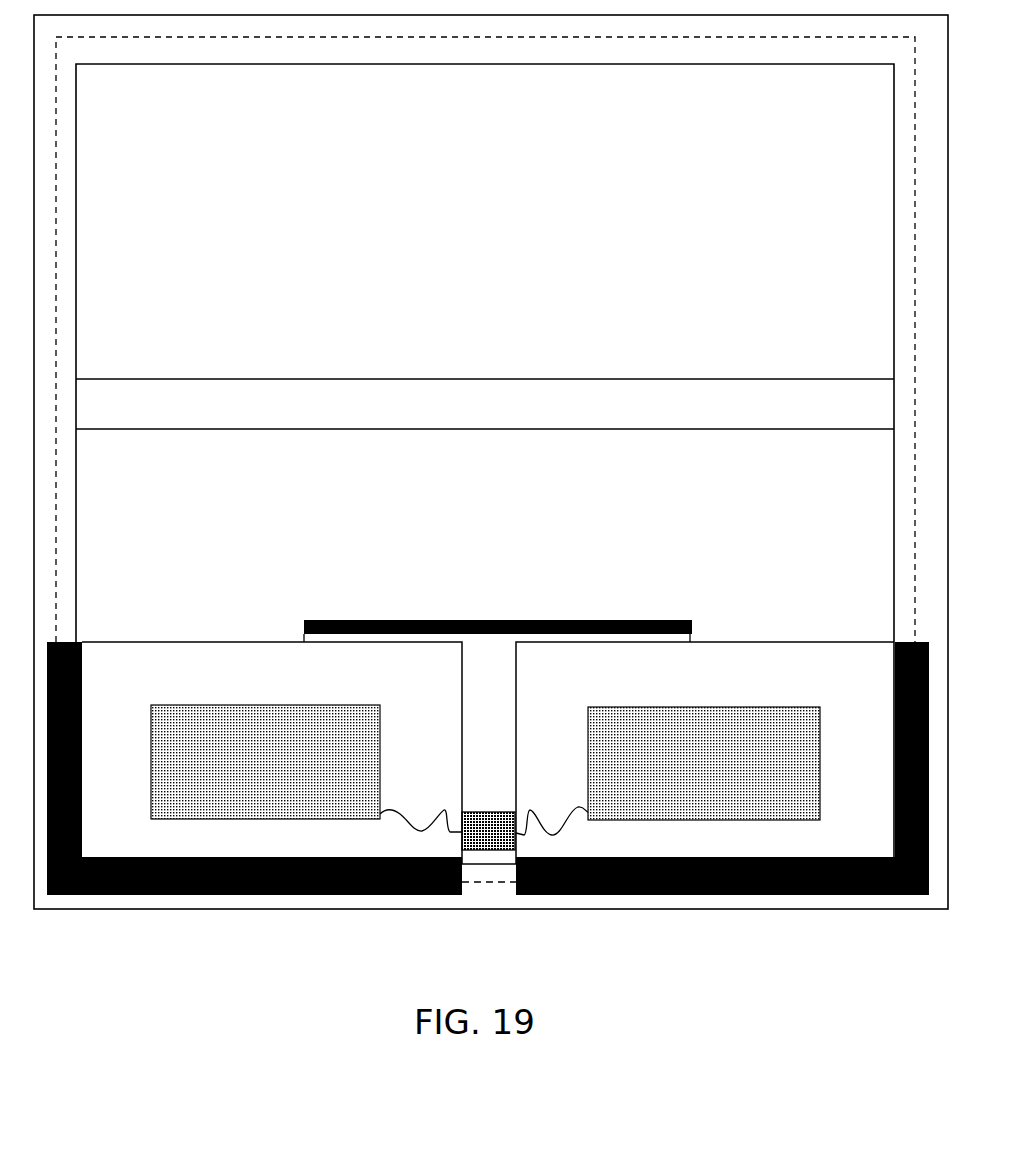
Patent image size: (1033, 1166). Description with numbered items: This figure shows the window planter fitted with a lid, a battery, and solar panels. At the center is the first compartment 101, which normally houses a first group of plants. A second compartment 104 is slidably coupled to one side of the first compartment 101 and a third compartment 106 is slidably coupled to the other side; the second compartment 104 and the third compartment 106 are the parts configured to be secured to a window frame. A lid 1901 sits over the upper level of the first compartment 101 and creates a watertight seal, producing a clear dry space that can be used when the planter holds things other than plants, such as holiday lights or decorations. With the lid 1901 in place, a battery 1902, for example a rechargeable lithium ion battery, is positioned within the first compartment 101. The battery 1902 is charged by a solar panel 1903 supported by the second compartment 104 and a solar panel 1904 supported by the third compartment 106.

The first compartment 101 is at (485, 658).
The second compartment 104 is at (346, 831).
The third compartment 106 is at (634, 833).
The lid 1901 is at (486, 615).
The battery 1902 is at (488, 824).
The solar panel 1903 is at (185, 750).
The solar panel 1904 is at (788, 762).